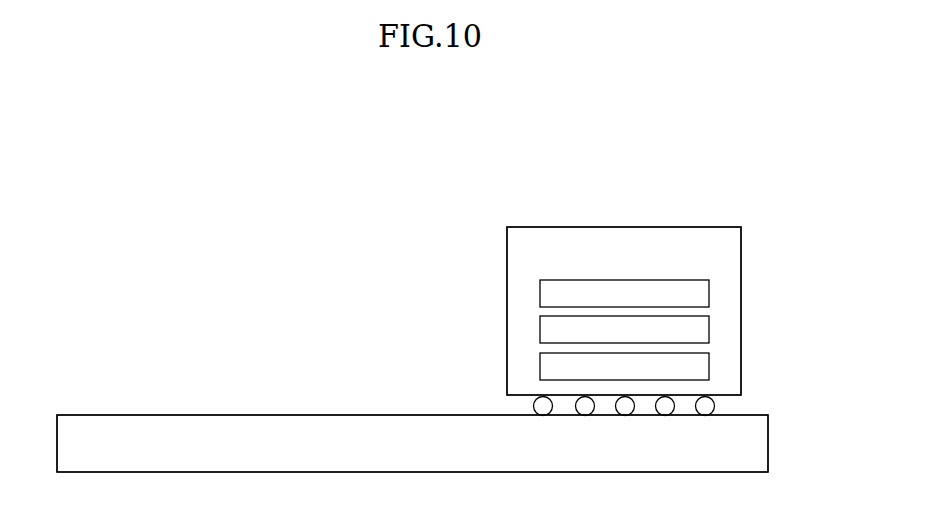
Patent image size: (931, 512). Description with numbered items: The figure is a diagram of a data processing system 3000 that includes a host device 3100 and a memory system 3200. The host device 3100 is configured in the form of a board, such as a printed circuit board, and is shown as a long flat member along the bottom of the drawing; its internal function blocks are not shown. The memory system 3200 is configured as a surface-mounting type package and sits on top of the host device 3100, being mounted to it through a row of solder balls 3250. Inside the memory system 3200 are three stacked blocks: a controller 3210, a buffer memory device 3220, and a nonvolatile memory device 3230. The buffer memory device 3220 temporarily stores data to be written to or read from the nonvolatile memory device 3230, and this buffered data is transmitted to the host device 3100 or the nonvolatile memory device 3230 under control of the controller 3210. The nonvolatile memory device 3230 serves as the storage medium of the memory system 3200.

The data processing system 3000 is at (117, 170).
The host device 3100 is at (412, 443).
The memory system 3200 is at (624, 311).
The controller 3210 is at (624, 294).
The buffer memory device 3220 is at (624, 330).
The nonvolatile memory device 3230 is at (624, 367).
The solder balls 3250 is at (725, 407).